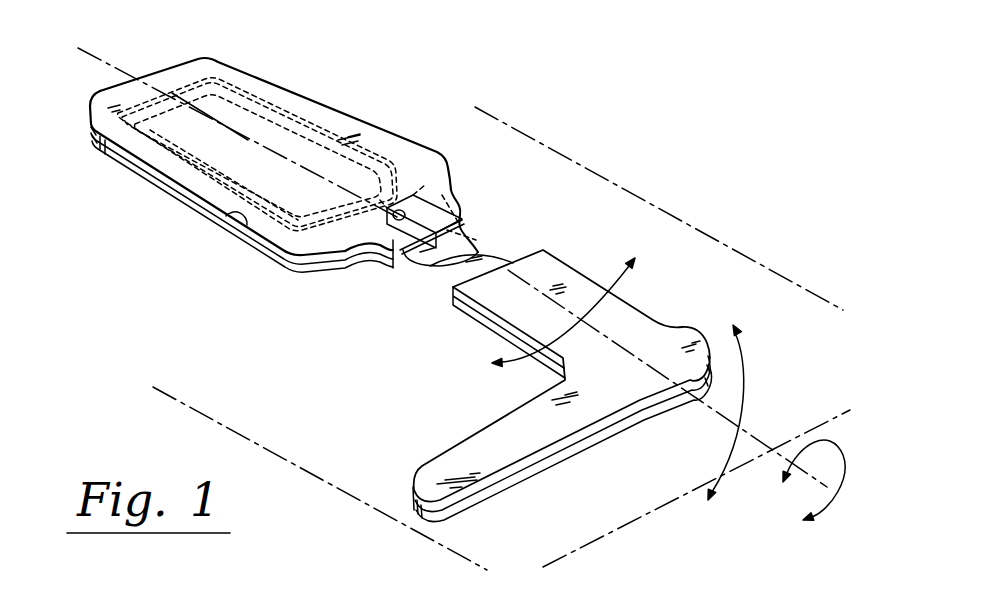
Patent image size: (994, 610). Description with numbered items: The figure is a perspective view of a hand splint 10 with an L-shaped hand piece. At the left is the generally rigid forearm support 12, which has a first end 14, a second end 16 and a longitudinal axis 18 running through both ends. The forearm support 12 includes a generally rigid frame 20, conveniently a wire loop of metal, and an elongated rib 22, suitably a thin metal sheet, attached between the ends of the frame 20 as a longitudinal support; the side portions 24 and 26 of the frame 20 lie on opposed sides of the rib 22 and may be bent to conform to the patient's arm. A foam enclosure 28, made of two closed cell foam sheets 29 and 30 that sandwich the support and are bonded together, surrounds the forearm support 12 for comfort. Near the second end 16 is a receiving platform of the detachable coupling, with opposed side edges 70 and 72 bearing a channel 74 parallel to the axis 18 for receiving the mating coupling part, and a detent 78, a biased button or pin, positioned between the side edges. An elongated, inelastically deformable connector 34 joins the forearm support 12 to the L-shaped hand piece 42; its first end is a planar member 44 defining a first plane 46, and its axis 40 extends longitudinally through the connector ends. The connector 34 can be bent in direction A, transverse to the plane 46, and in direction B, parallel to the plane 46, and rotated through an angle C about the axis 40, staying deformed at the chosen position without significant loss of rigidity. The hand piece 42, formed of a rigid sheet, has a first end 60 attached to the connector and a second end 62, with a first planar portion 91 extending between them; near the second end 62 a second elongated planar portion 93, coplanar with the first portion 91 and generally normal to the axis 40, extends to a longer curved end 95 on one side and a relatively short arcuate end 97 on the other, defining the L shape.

The hand splint 10 is at (493, 145).
The forearm support 12 is at (197, 212).
The first end 14 is at (177, 62).
The second end 16 is at (397, 273).
The longitudinal axis 18 is at (93, 50).
The frame 20 is at (315, 117).
The elongated rib 22 is at (203, 97).
The side portion 24 is at (263, 93).
The side portion 26 is at (183, 166).
The foam enclosure 28 is at (92, 125).
The foam sheet 29 is at (227, 223).
The foam sheet 30 is at (273, 257).
The connector 34 is at (447, 265).
The connector axis 40 is at (750, 437).
The L-shaped hand piece 42 is at (637, 307).
The planar member 44 is at (460, 227).
The first plane 46 is at (673, 245).
The first end 60 is at (526, 258).
The second end 62 is at (563, 457).
The side edge 70 is at (450, 170).
The side edge 72 is at (372, 232).
The channel 74 is at (466, 198).
The detent 78 is at (402, 208).
The first planar portion 91 is at (557, 275).
The second elongated planar portion 93 is at (493, 470).
The curved end 95 is at (420, 505).
The arcuate end 97 is at (695, 325).
The direction A is at (741, 372).
The direction B is at (613, 292).
The angle C is at (845, 463).